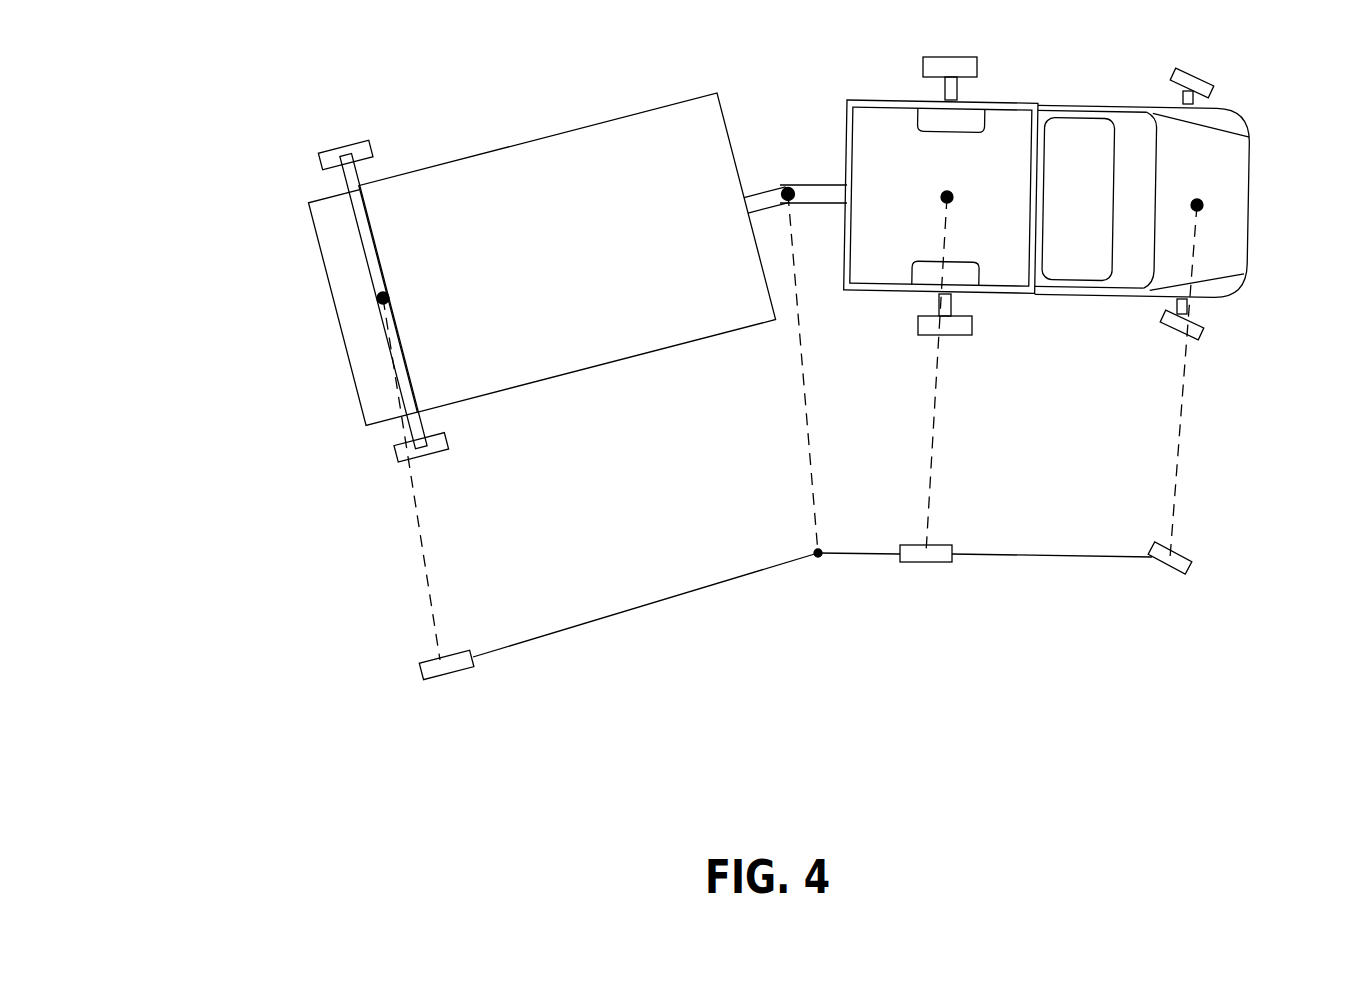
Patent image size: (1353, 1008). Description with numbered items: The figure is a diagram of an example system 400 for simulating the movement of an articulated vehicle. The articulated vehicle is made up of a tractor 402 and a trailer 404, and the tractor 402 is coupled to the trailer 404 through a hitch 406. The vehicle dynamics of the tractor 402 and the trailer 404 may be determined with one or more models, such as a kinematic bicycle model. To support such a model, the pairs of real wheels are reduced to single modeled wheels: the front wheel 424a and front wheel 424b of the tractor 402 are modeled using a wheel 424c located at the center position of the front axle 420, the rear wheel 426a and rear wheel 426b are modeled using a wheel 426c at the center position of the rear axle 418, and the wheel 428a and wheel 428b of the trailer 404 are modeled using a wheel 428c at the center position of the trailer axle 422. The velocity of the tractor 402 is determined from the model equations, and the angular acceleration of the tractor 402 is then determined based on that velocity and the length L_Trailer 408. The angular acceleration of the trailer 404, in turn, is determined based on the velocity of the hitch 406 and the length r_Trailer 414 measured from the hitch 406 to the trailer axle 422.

The system 400 is at (142, 63).
The tractor 402 is at (1256, 148).
The trailer 404 is at (601, 118).
The hitch 406 is at (790, 186).
The L_Trailer 408 is at (1056, 553).
The r_Trailer 414 is at (612, 616).
The rear axle 418 is at (953, 193).
The front axle 420 is at (1203, 206).
The trailer axle 422 is at (390, 297).
The front wheel 424a is at (1220, 82).
The front wheel 424b is at (1207, 332).
The wheel 424c is at (1196, 562).
The rear wheel 426a is at (990, 66).
The rear wheel 426b is at (982, 326).
The wheel 426c is at (935, 566).
The wheel 428a is at (378, 143).
The wheel 428b is at (456, 441).
The wheel 428c is at (418, 678).